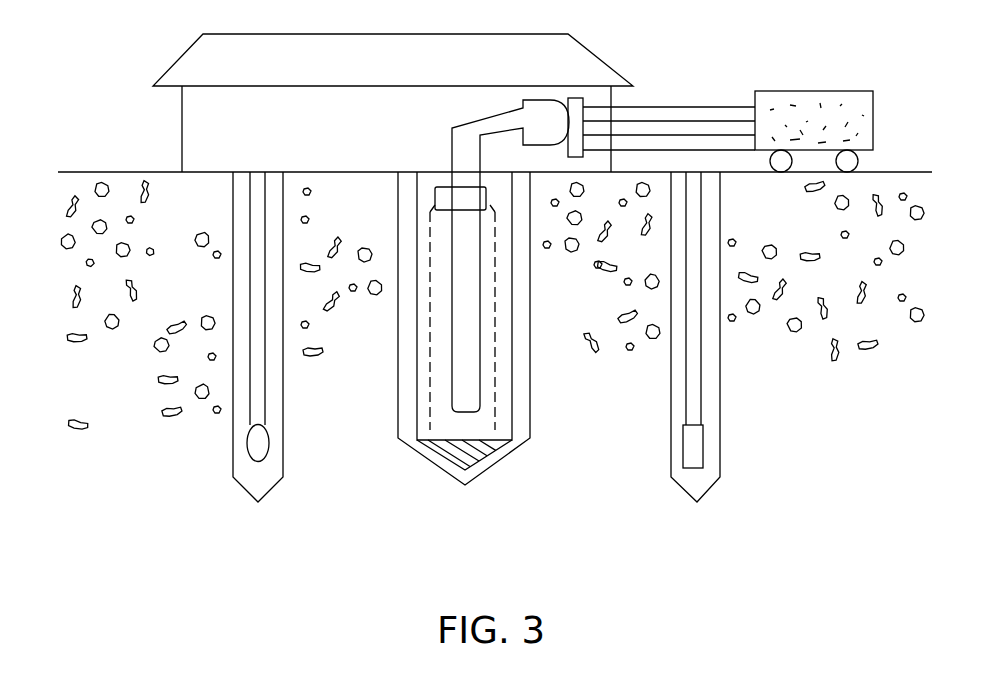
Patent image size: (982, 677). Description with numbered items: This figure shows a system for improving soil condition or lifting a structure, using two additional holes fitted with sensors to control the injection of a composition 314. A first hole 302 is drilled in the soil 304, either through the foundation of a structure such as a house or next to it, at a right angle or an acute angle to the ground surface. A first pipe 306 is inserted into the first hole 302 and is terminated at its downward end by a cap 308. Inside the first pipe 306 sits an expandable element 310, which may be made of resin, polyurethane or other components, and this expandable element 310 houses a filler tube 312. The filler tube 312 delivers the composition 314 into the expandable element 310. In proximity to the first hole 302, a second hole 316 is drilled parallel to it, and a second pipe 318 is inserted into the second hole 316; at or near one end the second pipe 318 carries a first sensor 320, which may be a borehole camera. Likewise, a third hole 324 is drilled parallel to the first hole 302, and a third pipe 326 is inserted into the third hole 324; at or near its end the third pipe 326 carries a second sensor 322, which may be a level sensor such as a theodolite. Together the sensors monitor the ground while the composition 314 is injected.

The first hole 302 is at (398, 195).
The soil 304 is at (127, 417).
The first pipe 306 is at (417, 378).
The cap 308 is at (448, 472).
The expandable element 310 is at (428, 323).
The filler tube 312 is at (480, 332).
The composition 314 is at (827, 113).
The second hole 316 is at (720, 190).
The second pipe 318 is at (701, 347).
The first sensor 320 is at (683, 453).
The second sensor 322 is at (269, 440).
The third hole 324 is at (233, 198).
The third pipe 326 is at (248, 300).